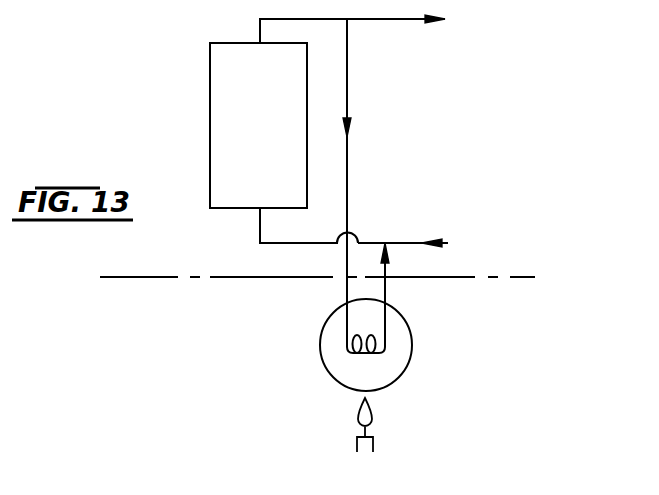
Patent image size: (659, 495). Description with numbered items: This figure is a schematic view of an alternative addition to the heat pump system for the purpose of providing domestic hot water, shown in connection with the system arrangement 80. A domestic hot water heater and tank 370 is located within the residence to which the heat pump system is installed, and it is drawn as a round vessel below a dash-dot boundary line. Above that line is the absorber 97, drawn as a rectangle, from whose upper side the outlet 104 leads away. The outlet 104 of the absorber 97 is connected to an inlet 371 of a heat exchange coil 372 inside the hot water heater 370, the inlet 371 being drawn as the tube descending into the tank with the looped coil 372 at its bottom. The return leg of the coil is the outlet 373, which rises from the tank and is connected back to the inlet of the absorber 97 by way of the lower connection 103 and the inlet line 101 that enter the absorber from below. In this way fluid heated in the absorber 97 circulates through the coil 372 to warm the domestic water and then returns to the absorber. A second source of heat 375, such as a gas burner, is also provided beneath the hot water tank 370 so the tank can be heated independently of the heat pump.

The apparatus 80 is at (10, 37).
The absorber 97 is at (210, 130).
The inlet line 101 is at (414, 243).
The bottom line 103 is at (258, 210).
The outlet 104 is at (258, 42).
The domestic hot water heater and tank 370 is at (320, 352).
The inlet 371 is at (347, 302).
The heat exchange coil 372 is at (385, 340).
The outlet tube 373 is at (385, 303).
The second source of heat 375 is at (360, 436).